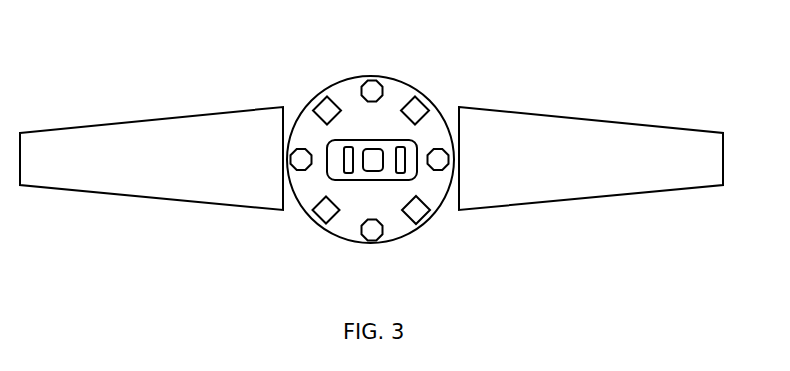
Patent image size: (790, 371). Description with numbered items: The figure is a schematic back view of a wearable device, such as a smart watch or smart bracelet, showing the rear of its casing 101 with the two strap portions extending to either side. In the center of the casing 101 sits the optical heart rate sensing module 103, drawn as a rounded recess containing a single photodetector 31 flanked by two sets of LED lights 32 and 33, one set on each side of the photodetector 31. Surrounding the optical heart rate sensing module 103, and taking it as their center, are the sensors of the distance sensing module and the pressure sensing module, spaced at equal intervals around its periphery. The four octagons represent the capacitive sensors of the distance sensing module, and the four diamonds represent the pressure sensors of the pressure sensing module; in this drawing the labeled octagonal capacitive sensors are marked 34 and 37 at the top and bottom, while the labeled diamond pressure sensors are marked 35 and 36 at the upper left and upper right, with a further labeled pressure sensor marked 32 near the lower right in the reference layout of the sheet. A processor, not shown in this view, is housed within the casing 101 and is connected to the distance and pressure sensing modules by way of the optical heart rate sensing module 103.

The photodetector 31 is at (324, 218).
The LED lights 32 is at (472, 233).
The LED lights 33 is at (309, 200).
The top fastening hole 34 is at (315, 62).
The upper left positioning hole 35 is at (294, 91).
The upper right positioning hole 36 is at (450, 90).
The bottom fastening hole 37 is at (454, 257).
The casing 101 is at (468, 194).
The optical heart rate sensing module 103 is at (413, 97).